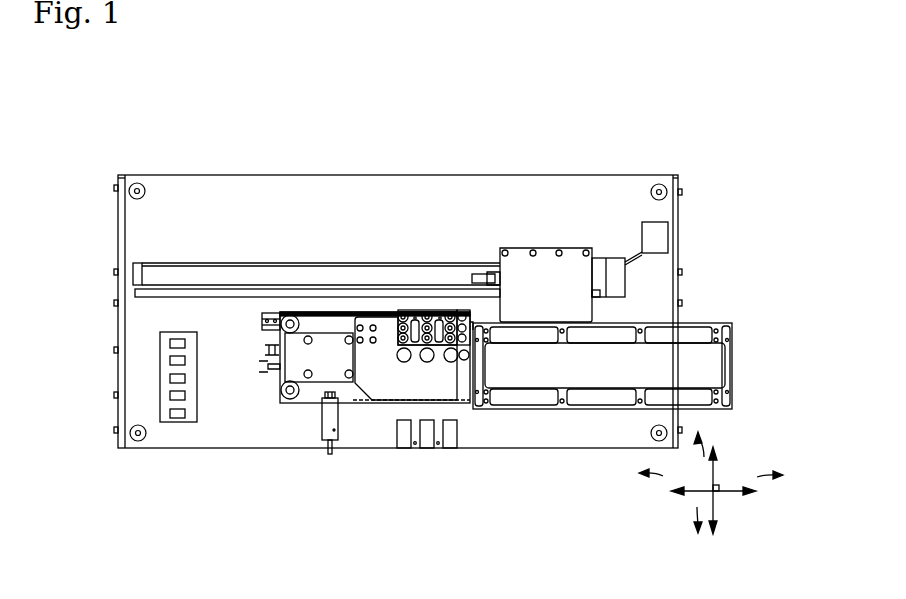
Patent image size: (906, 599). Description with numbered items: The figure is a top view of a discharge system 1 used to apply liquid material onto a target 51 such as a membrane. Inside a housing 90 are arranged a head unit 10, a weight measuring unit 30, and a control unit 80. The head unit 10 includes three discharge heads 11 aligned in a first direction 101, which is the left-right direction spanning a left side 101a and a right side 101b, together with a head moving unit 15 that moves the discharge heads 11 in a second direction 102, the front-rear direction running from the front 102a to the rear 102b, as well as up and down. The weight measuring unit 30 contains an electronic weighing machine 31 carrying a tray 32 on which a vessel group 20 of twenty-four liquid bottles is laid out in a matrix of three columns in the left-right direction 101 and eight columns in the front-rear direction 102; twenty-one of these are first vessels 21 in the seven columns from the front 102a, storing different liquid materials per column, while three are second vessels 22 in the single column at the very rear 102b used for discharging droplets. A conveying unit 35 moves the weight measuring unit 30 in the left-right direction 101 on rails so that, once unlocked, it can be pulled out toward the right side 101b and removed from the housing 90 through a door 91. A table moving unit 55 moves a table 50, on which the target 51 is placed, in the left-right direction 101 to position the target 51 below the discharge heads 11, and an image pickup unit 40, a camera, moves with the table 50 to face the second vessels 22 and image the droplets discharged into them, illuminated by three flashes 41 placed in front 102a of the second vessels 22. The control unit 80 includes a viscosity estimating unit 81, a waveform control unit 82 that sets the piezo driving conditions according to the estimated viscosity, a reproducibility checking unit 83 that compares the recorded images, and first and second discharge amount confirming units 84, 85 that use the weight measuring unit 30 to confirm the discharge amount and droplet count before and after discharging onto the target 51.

The discharge system 1 is at (658, 132).
The head unit 10 is at (385, 343).
The discharge head 11 is at (404, 362).
The head moving unit 15 is at (367, 318).
The vessel group 20 is at (424, 318).
The first vessels 21 is at (472, 325).
The second vessels 22 is at (467, 322).
The weight measuring unit 30 is at (290, 408).
The electronic weighing machine 31 is at (325, 368).
The tray 32 is at (420, 308).
The conveying unit 35 is at (337, 415).
The image pickup unit 40 is at (667, 228).
The flashes 41 is at (455, 446).
The table 50 is at (695, 335).
The target 51 is at (708, 362).
The table moving unit 55 is at (616, 280).
The control unit 80 is at (190, 425).
The viscosity estimating unit 81 is at (170, 343).
The waveform control unit 82 is at (170, 360).
The reproducibility checking unit 83 is at (170, 378).
The first discharge amount confirming unit 84 is at (170, 395).
The second discharge amount confirming unit 85 is at (175, 415).
The housing 90 is at (120, 333).
The door 91 is at (680, 315).
The first direction 101 is at (725, 493).
The left side 101a is at (663, 476).
The right side 101b is at (757, 477).
The second direction 102 is at (713, 473).
The front 102a is at (695, 520).
The rear 102b is at (713, 448).